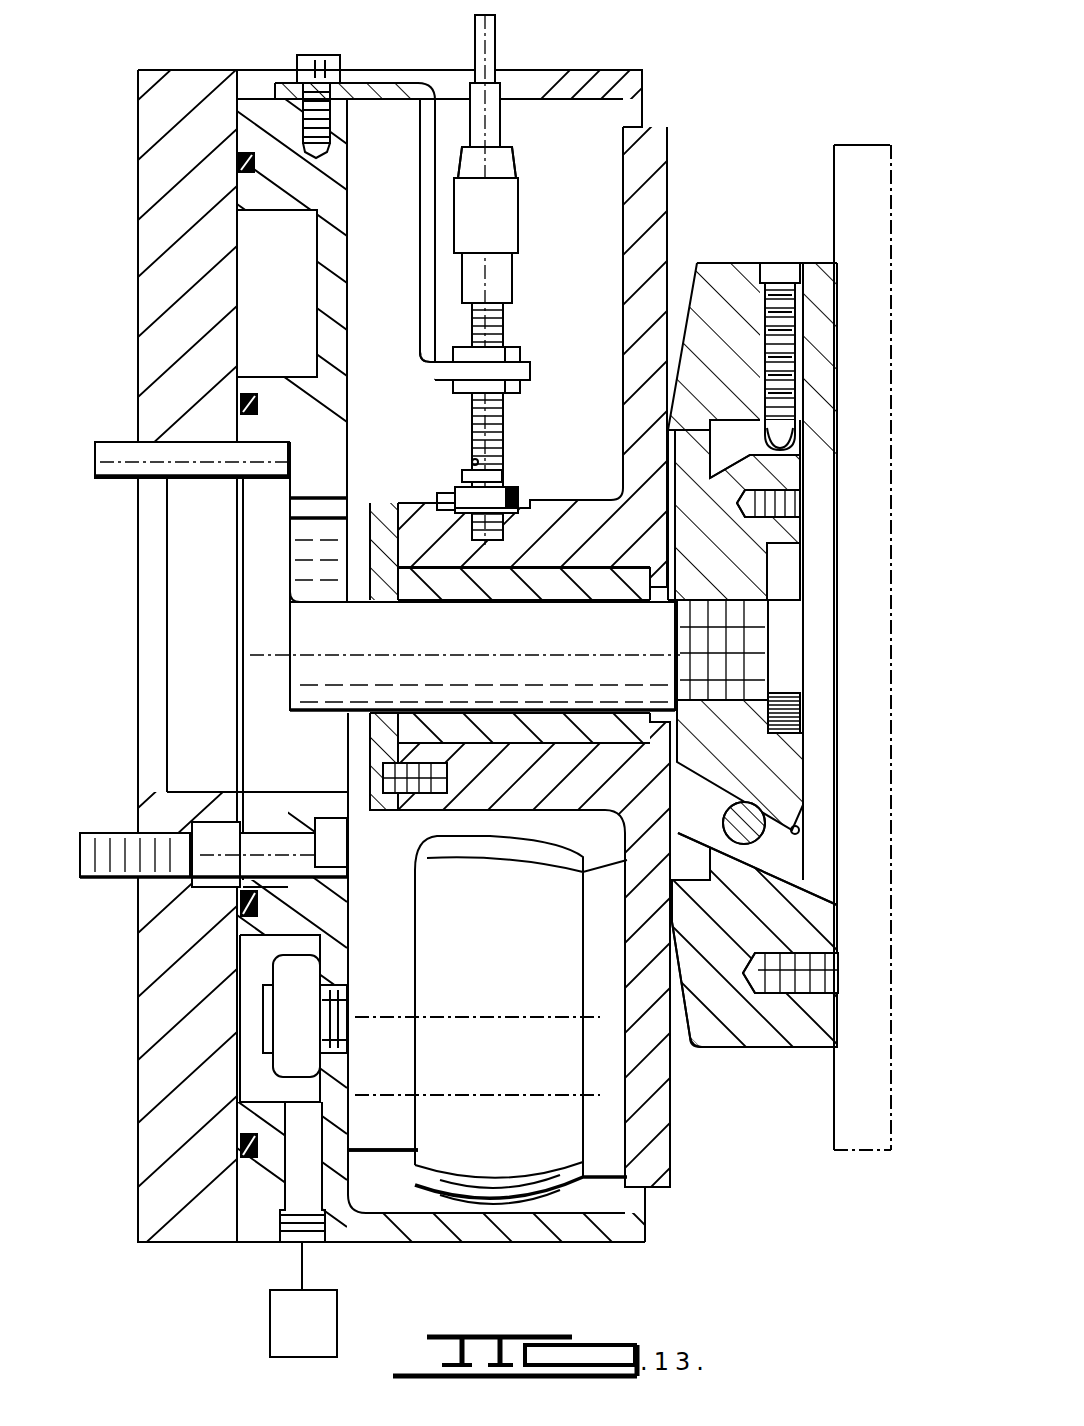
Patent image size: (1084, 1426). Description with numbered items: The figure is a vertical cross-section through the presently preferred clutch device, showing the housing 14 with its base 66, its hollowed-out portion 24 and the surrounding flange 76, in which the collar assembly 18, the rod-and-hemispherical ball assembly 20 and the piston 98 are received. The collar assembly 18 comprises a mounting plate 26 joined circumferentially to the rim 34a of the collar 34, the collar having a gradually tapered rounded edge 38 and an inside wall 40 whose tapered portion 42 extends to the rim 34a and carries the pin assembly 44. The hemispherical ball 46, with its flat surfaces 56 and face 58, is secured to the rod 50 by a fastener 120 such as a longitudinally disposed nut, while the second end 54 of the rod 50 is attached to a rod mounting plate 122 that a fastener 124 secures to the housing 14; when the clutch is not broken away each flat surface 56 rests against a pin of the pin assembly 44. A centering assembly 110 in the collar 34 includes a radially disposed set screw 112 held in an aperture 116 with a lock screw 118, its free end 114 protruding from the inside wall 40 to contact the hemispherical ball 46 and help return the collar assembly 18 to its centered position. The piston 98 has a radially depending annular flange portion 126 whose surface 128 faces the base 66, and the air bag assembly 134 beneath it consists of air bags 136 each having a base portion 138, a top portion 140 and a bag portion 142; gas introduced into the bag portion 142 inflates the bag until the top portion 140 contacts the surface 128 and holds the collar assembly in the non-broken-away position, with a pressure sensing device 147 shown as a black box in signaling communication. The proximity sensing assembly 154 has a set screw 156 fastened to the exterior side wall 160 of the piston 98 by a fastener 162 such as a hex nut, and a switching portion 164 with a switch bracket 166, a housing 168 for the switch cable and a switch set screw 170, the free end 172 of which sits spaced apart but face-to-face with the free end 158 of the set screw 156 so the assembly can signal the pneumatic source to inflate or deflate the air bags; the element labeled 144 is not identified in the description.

The housing 14 is at (256, 1228).
The collar assembly 18 is at (709, 250).
The rod-and-hemispherical ball assembly 20 is at (784, 468).
The hollowed-out portion 24 is at (598, 152).
The mounting plate 26 is at (893, 1130).
The collar 34 is at (760, 1040).
The rim 34a is at (812, 410).
The rounded edge 38 is at (685, 1040).
The inside wall 40 is at (838, 892).
The tapered portion 42 is at (782, 895).
The pin assembly 44 is at (772, 824).
The hemispherical ball 46 is at (792, 530).
The rod 50 is at (292, 655).
The second end 54 is at (300, 697).
The flat surfaces 56 is at (798, 828).
The face 58 is at (805, 768).
The base 66 is at (152, 1026).
The flange 76 is at (630, 1226).
The piston 98 is at (575, 522).
The centering assembly 110 is at (770, 282).
The set screw 112 is at (797, 372).
The free end 114 is at (798, 440).
The aperture 116 is at (790, 265).
The lock screw 118 is at (805, 327).
The fastener 120 is at (792, 600).
The rod mounting plate 122 is at (262, 582).
The fastener 124 is at (302, 835).
The annular flange portion 126 is at (651, 184).
The surface 128 is at (620, 290).
The air bag assembly 134 is at (408, 1168).
The air bags 136 is at (462, 1235).
The base portion 138 is at (375, 900).
The top portion 140 is at (600, 1150).
The bag portion 142 is at (515, 1200).
The rod 144 is at (500, 125).
The pressure sensing device 147 is at (280, 1332).
The proximity sensing assembly 154 is at (545, 218).
The set screw 156 is at (500, 472).
The free end 158 is at (500, 448).
The exterior side wall 160 is at (452, 496).
The fastener 162 is at (462, 488).
The switching portion 164 is at (426, 385).
The switch bracket 166 is at (420, 246).
The housing 168 is at (512, 282).
The switch set screw 170 is at (505, 412).
The free end 172 is at (473, 460).